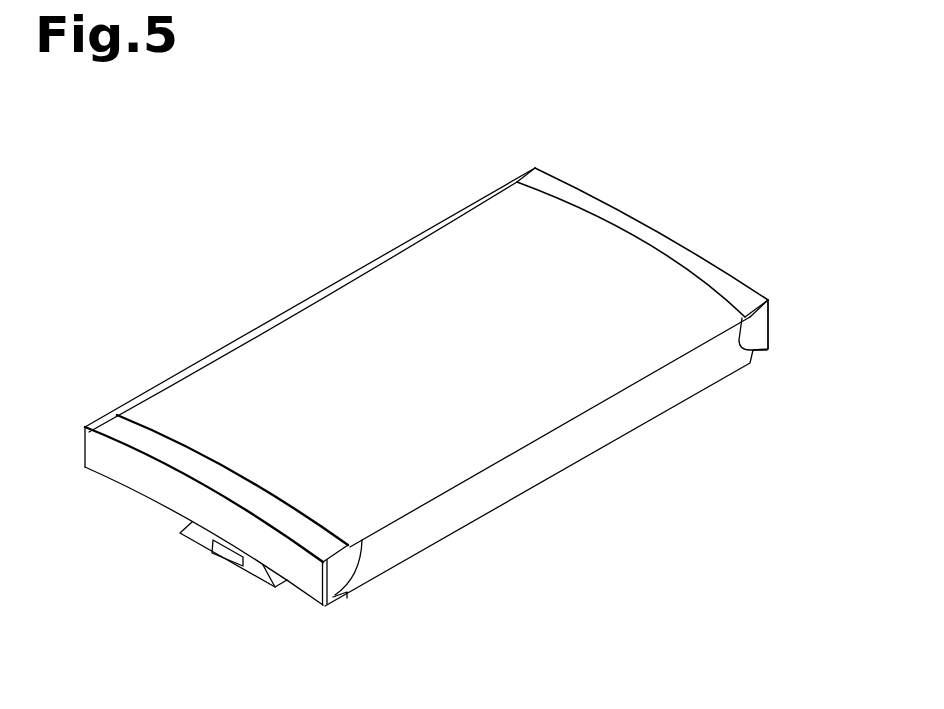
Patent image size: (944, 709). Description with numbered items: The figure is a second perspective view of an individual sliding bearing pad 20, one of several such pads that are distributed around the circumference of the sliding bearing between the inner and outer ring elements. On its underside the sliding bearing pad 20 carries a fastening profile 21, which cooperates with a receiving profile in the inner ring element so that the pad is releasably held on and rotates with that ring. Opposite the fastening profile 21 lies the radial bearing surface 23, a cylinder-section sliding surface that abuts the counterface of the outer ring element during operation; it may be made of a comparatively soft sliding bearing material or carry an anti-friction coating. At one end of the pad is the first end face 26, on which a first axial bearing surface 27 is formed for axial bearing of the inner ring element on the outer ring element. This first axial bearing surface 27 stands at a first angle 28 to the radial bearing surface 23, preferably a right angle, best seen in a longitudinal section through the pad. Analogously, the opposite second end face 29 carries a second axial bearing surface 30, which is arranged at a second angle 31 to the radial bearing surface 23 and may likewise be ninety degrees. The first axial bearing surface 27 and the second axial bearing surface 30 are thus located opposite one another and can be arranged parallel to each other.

The sliding bearing pad 20 is at (461, 368).
The fastening profile 21 is at (257, 563).
The radial bearing surface 23 is at (408, 318).
The first end face 26 is at (708, 259).
The first axial bearing surface 27 is at (766, 294).
The first angle 28 is at (738, 340).
The second end face 29 is at (255, 470).
The second axial bearing surface 30 is at (125, 458).
The second angle 31 is at (356, 573).